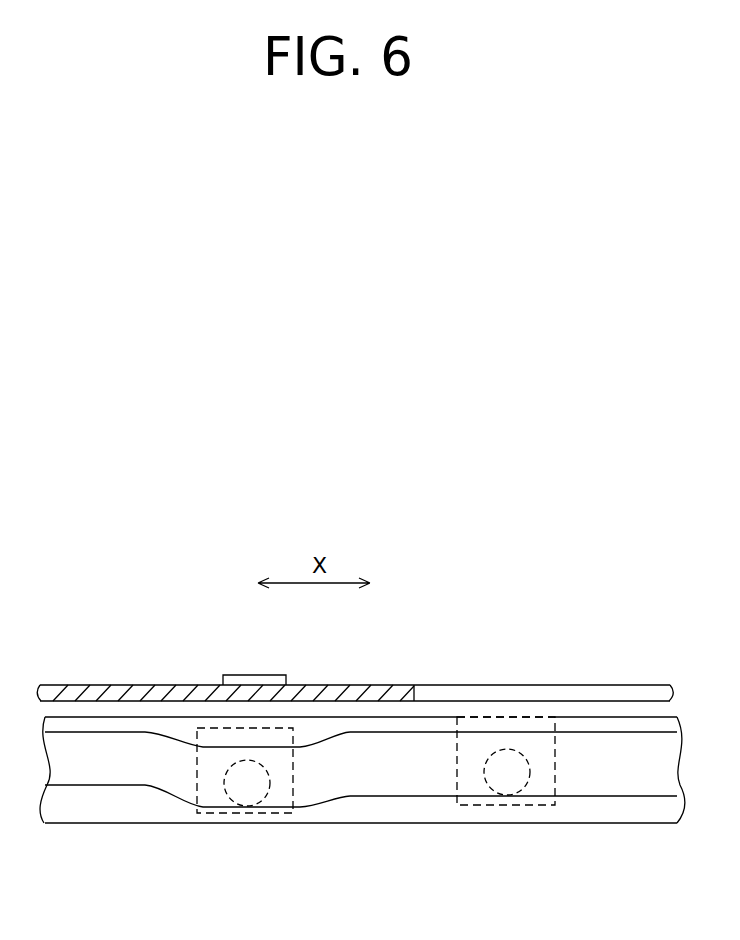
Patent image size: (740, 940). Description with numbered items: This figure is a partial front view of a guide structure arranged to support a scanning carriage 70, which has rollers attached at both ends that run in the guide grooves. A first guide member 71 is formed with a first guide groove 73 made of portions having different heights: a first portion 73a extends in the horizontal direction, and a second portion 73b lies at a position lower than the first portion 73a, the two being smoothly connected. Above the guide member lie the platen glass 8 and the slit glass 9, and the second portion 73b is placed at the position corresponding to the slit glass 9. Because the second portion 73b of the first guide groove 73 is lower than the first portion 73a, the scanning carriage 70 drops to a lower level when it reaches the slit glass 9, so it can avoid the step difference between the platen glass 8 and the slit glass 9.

The platen glass 8 is at (630, 689).
The slit glass 9 is at (254, 684).
The scanning carriage 70 is at (270, 816).
The first guide member 71 is at (107, 723).
The first guide groove 73 is at (600, 716).
The first portion 73a is at (432, 747).
The second portion 73b is at (278, 755).